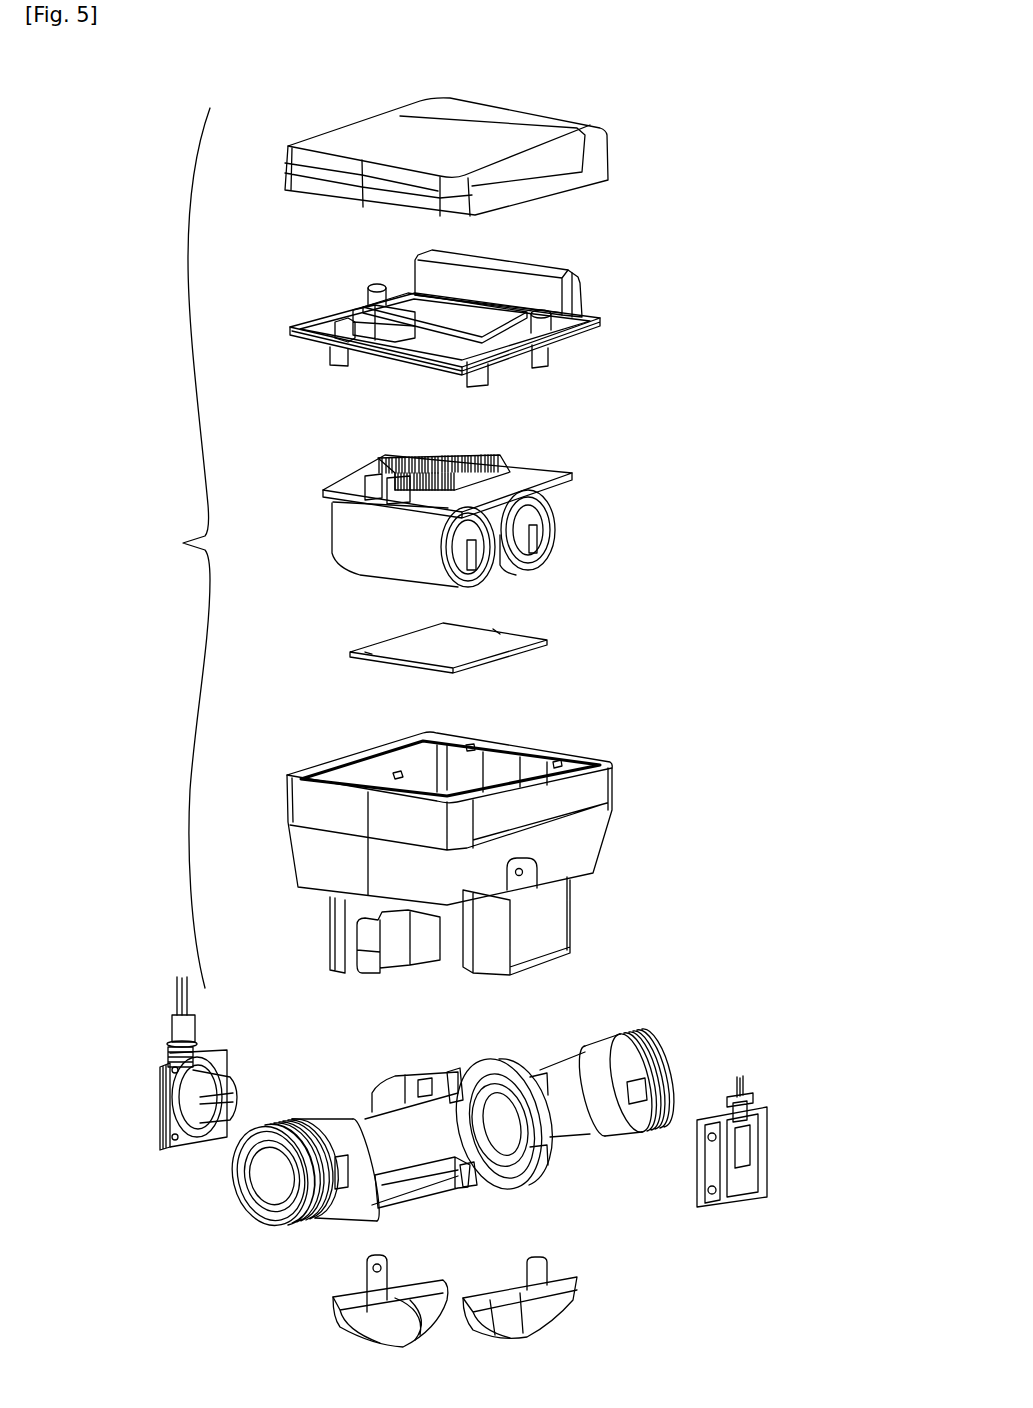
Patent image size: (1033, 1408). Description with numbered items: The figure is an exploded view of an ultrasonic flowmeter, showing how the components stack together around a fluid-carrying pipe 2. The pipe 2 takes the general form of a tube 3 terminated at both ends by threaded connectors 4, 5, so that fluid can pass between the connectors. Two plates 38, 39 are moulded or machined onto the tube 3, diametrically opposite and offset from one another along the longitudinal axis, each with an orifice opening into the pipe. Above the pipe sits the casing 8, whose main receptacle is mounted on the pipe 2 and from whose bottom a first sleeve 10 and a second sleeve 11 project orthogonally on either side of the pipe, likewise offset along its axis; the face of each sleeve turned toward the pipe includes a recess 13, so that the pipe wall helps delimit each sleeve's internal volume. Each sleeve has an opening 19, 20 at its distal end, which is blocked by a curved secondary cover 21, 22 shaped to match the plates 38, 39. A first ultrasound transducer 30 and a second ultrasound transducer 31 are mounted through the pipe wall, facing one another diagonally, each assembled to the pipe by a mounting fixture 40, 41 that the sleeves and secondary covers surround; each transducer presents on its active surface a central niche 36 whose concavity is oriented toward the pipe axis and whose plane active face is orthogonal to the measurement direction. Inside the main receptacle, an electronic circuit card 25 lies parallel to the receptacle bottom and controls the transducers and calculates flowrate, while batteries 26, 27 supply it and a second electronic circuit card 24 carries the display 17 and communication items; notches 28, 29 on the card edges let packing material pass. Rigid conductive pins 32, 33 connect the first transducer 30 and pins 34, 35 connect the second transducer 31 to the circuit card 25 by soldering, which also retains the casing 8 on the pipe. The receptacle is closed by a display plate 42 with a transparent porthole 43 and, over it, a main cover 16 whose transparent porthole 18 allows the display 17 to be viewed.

The pipe 2 is at (451, 1148).
The tube 3 is at (385, 1165).
The threaded connector 4 is at (613, 1027).
The threaded connector 5 is at (270, 1232).
The casing 8 is at (186, 548).
The first sleeve 10 is at (450, 884).
The second sleeve 11 is at (310, 918).
The recess 13 is at (377, 948).
The main cover 16 is at (514, 152).
The display 17 is at (392, 458).
The transparent porthole 18 is at (553, 122).
The opening 19 is at (382, 975).
The opening 20 is at (537, 975).
The second secondary cover 21 is at (332, 1310).
The first secondary cover 22 is at (588, 1305).
The second electronic circuit card 24 is at (485, 496).
The electronic circuit card 25 is at (470, 647).
The battery 26 is at (497, 580).
The battery 27 is at (572, 525).
The notch 28 is at (380, 668).
The notch 29 is at (515, 630).
The first ultrasound transducer 30 is at (188, 1068).
The second ultrasound transducer 31 is at (755, 1148).
The conductive pin 32 is at (173, 998).
The conductive pin 33 is at (183, 987).
The conductive pin 34 is at (747, 1083).
The conductive pin 35 is at (742, 1082).
The central niche 36 is at (225, 1100).
The plate 38 is at (413, 1203).
The plate 39 is at (533, 1182).
The mounting fixture 40 is at (153, 1150).
The mounting fixture 41 is at (703, 1190).
The display plate 42 is at (507, 308).
The transparent porthole 43 is at (402, 290).